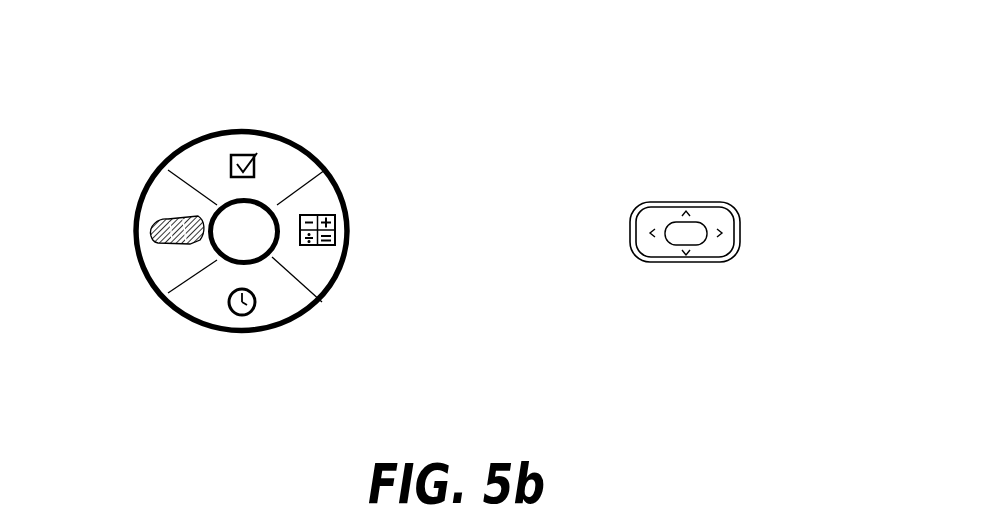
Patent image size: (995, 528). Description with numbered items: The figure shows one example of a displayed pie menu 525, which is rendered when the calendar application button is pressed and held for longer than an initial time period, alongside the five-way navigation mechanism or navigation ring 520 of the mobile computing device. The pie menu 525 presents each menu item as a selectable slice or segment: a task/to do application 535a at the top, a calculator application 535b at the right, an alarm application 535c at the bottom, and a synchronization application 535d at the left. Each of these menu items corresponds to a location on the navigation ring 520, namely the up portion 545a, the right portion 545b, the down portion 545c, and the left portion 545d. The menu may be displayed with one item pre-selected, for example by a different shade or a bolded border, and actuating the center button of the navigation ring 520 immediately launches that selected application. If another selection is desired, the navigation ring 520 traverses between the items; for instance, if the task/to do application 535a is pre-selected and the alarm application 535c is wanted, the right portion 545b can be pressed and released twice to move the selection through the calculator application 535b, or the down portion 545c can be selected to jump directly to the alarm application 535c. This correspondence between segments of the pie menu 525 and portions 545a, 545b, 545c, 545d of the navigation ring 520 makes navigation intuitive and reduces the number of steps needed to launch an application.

The pie menu 525 is at (393, 376).
The task/to do application 535a is at (272, 100).
The calculator application 535b is at (349, 244).
The alarm application 535c is at (240, 333).
The synchronization application 535d is at (133, 222).
The navigation ring 520 is at (817, 370).
The up portion of the navigation ring 545a is at (700, 201).
The right portion of the navigation ring 545b is at (734, 231).
The down portion of the navigation ring 545c is at (700, 265).
The left portion of the navigation ring 545d is at (635, 231).